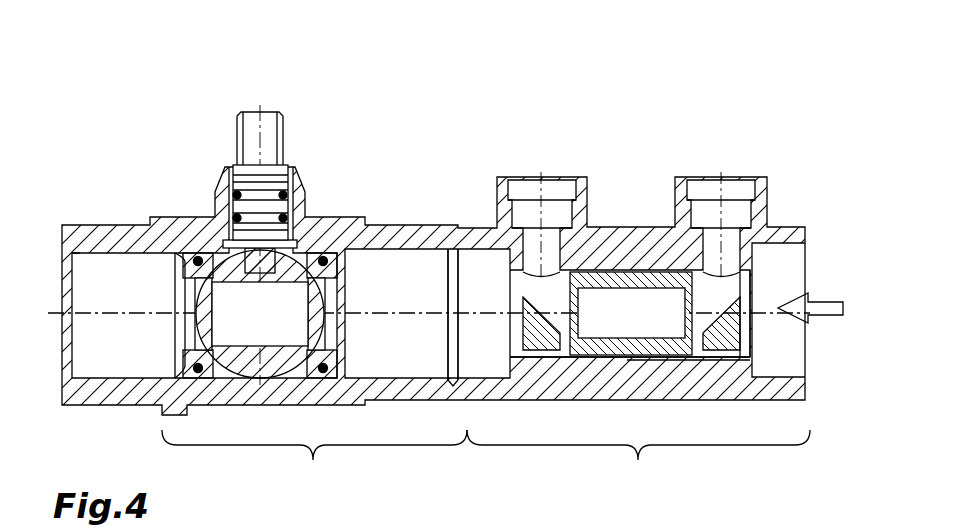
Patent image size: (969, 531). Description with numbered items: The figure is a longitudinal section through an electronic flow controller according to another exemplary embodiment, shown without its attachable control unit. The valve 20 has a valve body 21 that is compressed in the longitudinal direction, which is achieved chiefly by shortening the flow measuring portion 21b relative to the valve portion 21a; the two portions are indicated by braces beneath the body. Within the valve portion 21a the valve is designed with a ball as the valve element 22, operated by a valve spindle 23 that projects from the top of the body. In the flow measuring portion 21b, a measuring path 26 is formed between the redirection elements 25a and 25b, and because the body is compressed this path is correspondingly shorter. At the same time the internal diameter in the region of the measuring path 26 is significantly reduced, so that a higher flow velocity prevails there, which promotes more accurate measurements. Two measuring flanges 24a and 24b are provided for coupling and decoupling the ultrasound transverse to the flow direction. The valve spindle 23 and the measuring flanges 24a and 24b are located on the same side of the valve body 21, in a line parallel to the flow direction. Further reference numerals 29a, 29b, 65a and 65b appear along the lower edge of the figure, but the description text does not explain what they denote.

The valve 20 is at (348, 152).
The valve body 21 is at (628, 240).
The valve portion 21a is at (269, 375).
The flow measuring portion 21b is at (638, 427).
The valve element 22 is at (213, 255).
The valve spindle 23 is at (250, 135).
The measuring flange 24a is at (522, 195).
The measuring flange 24b is at (725, 190).
The redirection element 25a is at (525, 312).
The redirection element 25b is at (733, 312).
The measuring path 26 is at (602, 310).
The first partition wall 29a is at (487, 390).
The second partition wall 29b is at (687, 400).
The first sealing disc 65a is at (416, 390).
The second sealing disc 65b is at (744, 399).